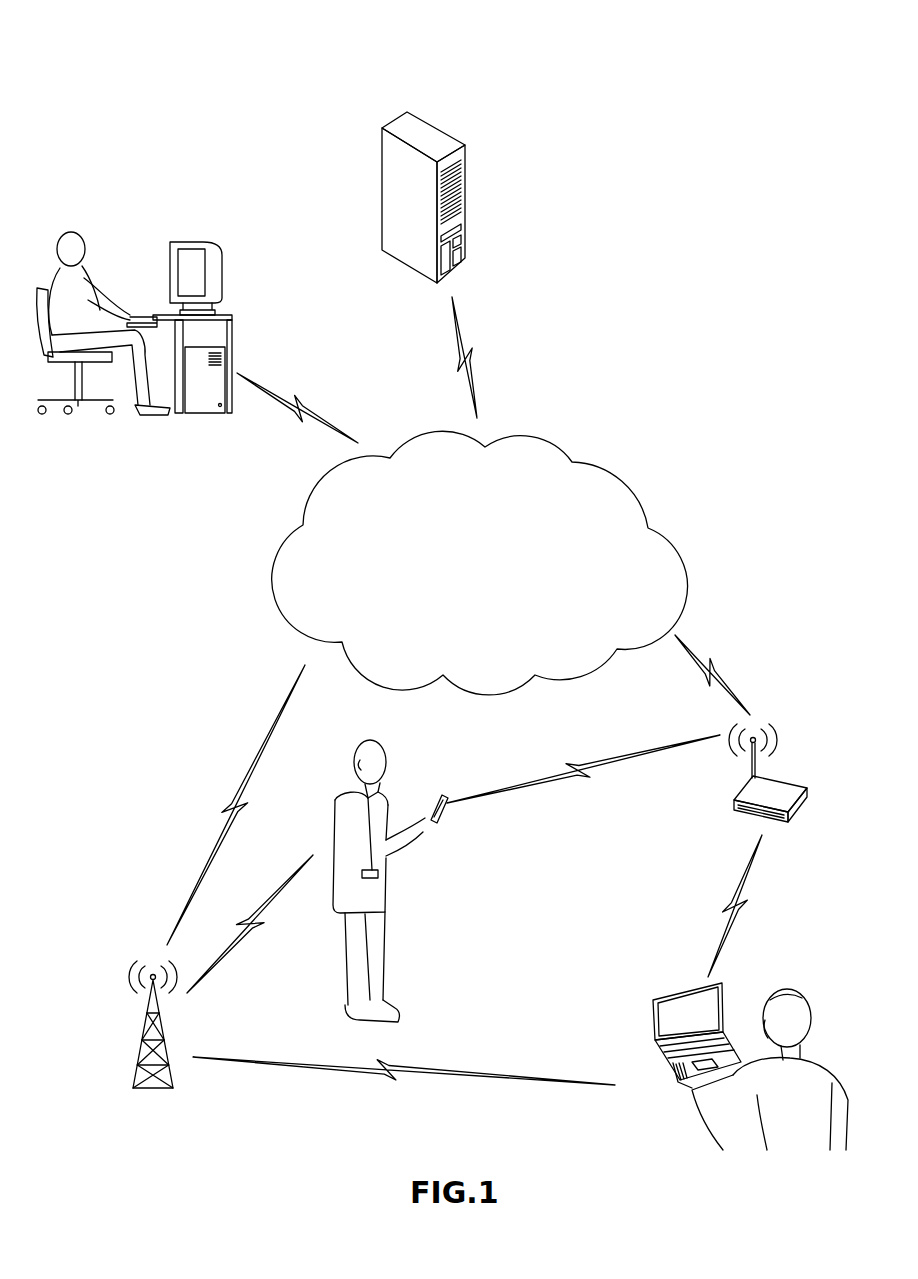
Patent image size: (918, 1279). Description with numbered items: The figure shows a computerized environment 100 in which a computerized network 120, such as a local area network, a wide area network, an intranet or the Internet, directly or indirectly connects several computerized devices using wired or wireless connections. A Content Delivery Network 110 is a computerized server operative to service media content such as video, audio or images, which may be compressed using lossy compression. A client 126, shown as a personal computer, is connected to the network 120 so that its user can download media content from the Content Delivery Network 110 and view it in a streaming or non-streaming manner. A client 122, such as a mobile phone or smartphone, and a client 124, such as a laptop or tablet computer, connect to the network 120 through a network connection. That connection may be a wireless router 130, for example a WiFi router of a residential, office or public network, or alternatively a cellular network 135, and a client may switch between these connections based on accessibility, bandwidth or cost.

The computerized environment 100 is at (152, 58).
The Content Delivery Network (CDN) 110 is at (382, 170).
The computerized network 120 is at (283, 540).
The client 122 is at (425, 790).
The client 124 is at (727, 1000).
The client 126 is at (233, 357).
The wireless router 130 is at (752, 790).
The cellular network 135 is at (137, 1022).